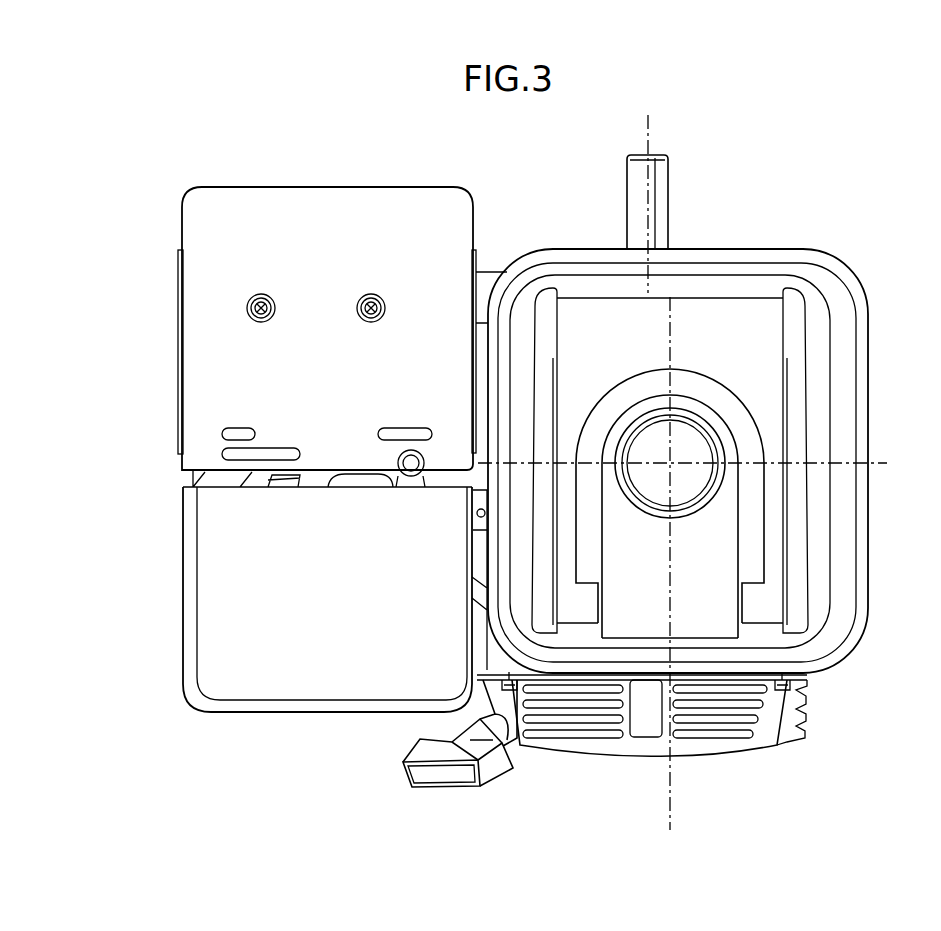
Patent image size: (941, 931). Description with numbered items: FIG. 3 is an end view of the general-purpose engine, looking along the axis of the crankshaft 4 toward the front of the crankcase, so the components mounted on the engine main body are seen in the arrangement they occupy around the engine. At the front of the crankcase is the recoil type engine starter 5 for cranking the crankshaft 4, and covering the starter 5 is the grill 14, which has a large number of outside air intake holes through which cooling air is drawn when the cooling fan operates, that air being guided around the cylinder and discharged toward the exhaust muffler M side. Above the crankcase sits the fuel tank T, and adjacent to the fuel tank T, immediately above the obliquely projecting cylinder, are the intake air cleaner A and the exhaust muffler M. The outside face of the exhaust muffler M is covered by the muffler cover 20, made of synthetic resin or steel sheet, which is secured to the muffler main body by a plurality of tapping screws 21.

The muffler cover 20 is at (413, 203).
The tapping screws 21 is at (362, 302).
The crankshaft 4 is at (662, 200).
The fuel tank T is at (850, 388).
The grill 14 is at (725, 742).
The recoil type engine starter 5 is at (520, 762).
The exhaust muffler M is at (337, 378).
The intake air cleaner A is at (377, 607).